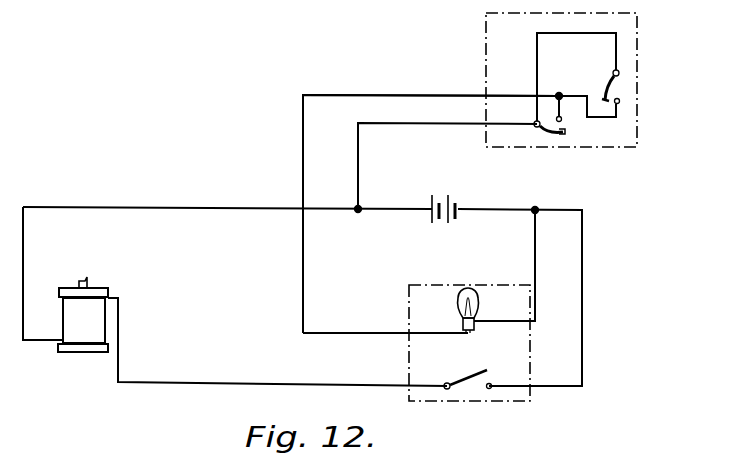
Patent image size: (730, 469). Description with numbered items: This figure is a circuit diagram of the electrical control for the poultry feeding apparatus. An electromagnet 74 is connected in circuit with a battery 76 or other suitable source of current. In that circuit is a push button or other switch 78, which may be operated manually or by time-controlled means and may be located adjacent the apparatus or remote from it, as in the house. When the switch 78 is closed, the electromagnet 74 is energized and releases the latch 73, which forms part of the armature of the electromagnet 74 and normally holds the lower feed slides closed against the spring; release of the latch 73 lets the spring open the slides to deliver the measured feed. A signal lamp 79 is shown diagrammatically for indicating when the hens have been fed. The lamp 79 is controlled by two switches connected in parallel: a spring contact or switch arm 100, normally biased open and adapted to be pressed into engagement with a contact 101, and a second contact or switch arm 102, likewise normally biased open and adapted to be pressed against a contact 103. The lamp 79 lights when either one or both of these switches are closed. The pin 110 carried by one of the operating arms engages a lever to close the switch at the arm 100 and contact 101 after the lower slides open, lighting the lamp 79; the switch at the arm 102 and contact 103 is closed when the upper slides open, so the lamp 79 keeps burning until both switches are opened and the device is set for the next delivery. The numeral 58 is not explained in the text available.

The lever (adjacent figure) 58 is at (0, 2).
The latch 73 is at (89, 279).
The electromagnet 74 is at (80, 337).
The battery 76 is at (444, 197).
The switch 78 is at (472, 392).
The signal lamp 79 is at (471, 291).
The contact or switch arm 100 is at (552, 136).
The contact 101 is at (563, 121).
The contact or switch arm 102 is at (611, 84).
The contact 103 is at (620, 103).
The pin 110 is at (356, 149).